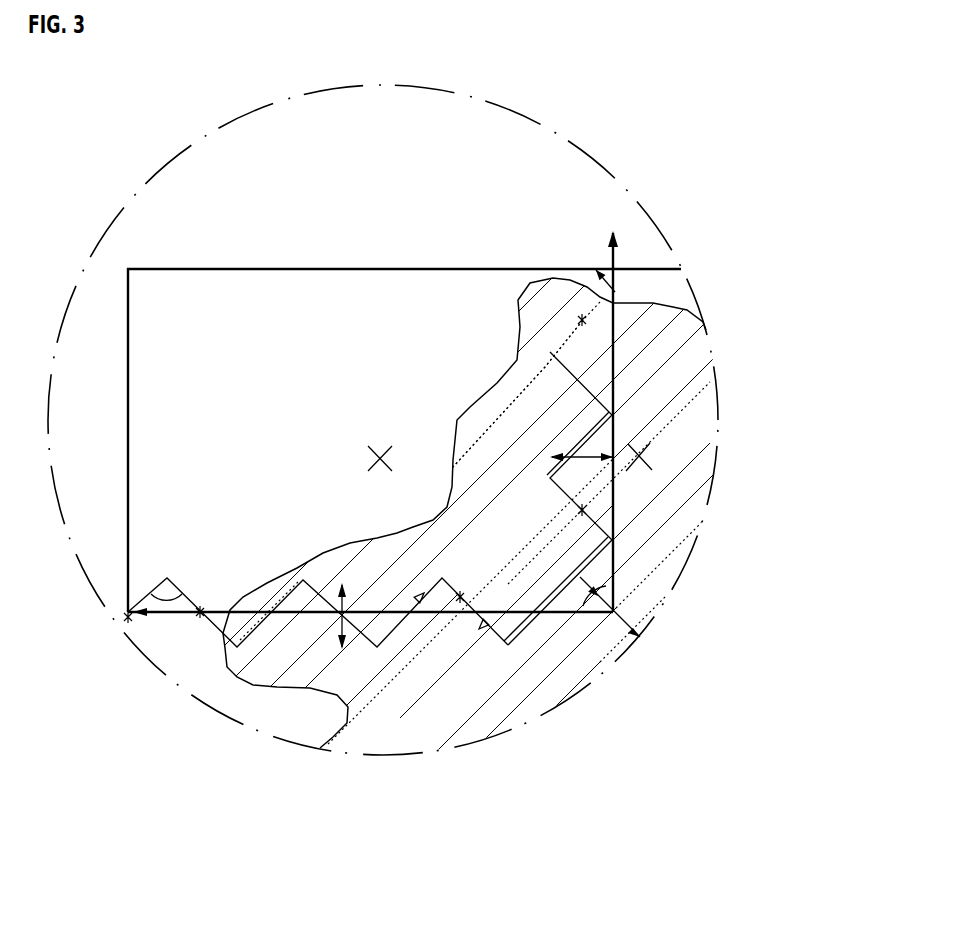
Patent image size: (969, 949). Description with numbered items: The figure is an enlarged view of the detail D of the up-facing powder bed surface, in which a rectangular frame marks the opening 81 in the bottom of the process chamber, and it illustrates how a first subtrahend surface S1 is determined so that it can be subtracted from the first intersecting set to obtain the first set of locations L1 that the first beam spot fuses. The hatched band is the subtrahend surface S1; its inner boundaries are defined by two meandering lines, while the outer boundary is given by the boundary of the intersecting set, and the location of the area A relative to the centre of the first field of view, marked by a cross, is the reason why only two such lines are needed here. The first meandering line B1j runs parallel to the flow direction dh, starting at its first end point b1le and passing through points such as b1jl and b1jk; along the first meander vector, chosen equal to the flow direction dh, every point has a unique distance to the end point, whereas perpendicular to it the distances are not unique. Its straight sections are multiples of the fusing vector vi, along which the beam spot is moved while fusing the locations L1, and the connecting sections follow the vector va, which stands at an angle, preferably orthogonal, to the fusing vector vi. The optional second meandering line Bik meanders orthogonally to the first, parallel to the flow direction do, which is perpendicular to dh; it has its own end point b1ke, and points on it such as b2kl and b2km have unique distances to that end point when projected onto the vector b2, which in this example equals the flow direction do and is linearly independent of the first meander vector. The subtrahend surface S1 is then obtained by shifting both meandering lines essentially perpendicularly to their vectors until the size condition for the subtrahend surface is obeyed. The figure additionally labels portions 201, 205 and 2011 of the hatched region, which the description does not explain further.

The opening 81 is at (395, 268).
The detail D is at (603, 163).
The first subtrahend surface S1 is at (380, 712).
The first set of locations L1 is at (493, 443).
The first scan sub-region 201 is at (381, 442).
The fifth scan sub-region 205 is at (601, 446).
The eleventh scan sub-region 2011 is at (485, 644).
The area A is at (673, 402).
The second meandering line Bik is at (600, 380).
The first meandering line B1j is at (165, 574).
The end point of second meandering line b1ke is at (610, 265).
The point on second meandering line b2kl is at (583, 320).
The point on second meandering line b2km is at (583, 510).
The second meander vector b2 is at (581, 457).
The point on first meandering line b1jk is at (460, 594).
The point on first meandering line b1jl is at (199, 606).
The first end point of first meandering line b1le is at (128, 620).
The flow direction vector do is at (596, 268).
The flow direction vector dh is at (293, 613).
The fusing vector vi is at (397, 627).
The transverse section vector va is at (493, 620).